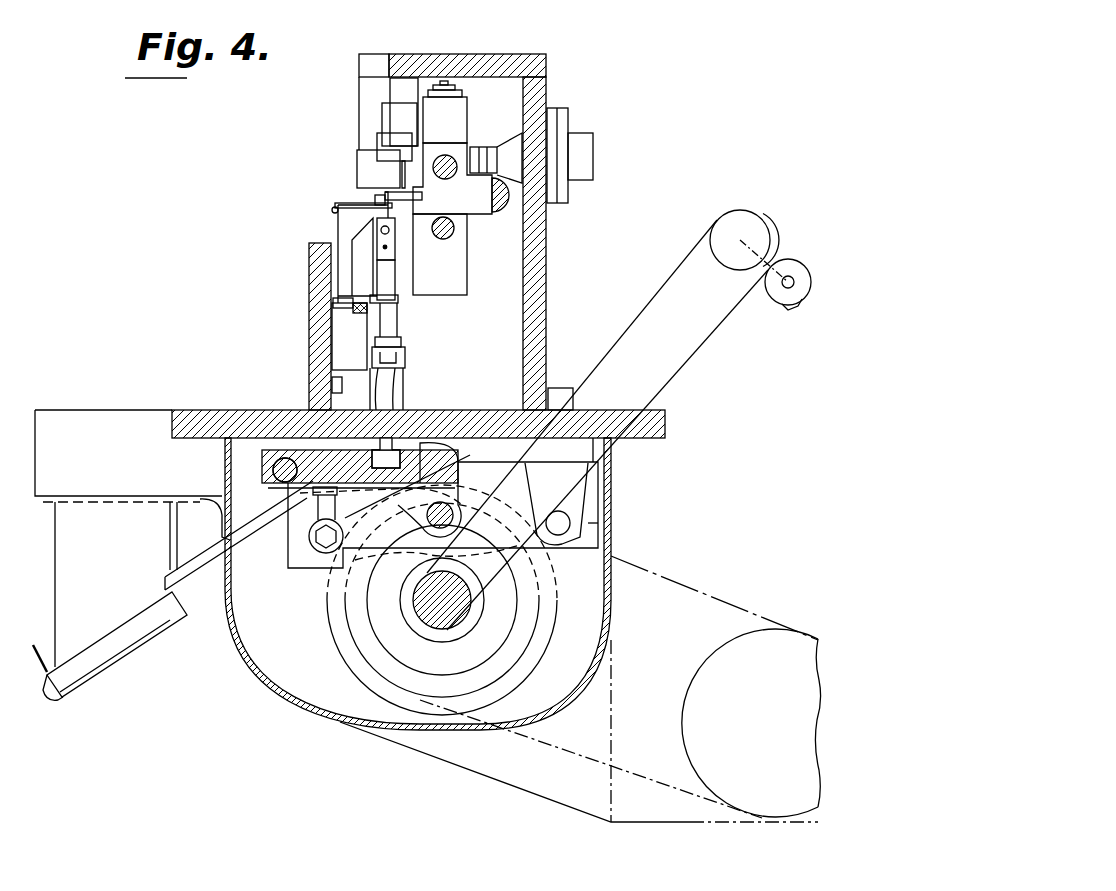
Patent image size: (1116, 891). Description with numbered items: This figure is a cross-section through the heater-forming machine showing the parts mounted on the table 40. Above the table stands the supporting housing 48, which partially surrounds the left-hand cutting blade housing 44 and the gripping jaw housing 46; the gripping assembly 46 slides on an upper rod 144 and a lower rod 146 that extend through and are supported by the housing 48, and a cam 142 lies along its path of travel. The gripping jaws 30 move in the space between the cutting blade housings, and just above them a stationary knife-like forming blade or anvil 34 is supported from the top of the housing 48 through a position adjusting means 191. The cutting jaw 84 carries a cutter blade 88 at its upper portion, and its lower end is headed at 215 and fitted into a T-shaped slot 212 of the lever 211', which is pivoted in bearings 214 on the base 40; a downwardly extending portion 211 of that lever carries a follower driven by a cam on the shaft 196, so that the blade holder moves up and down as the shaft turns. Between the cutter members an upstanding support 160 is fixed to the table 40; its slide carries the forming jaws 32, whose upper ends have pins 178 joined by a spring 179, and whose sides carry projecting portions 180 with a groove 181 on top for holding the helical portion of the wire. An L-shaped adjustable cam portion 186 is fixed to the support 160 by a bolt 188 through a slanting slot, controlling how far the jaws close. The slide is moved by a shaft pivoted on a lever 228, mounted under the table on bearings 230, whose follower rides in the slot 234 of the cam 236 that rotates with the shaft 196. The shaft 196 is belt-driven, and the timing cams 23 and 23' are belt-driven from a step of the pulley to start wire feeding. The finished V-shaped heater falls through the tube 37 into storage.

The supporting housing 48 is at (470, 54).
The gripping jaw housing 46 is at (470, 117).
The position adjusting means 191 is at (377, 140).
The forming blade or anvil 34 is at (390, 172).
The gripping jaws 30 is at (388, 192).
The projecting portion 180 is at (352, 202).
The pin 178 is at (332, 210).
The spring 179 is at (338, 222).
The forming jaws 32 is at (302, 260).
The upper rod 144 is at (445, 179).
The cam 142 is at (512, 249).
The groove 181 is at (392, 224).
The cutter blade 88 is at (387, 247).
The lower rod 146 is at (441, 239).
The cutting jaw 84 is at (391, 282).
The left-hand cutting blade housing 44 is at (467, 270).
The adjustable cam portion 186 is at (353, 306).
The bolt 188 is at (398, 322).
The upstanding support 160 is at (309, 332).
The timing cam 23 is at (607, 379).
The timing cam 23' is at (629, 444).
The table 40 is at (650, 438).
The T-shaped slots 212 is at (435, 447).
The lever 211' is at (452, 494).
The bearings 230 is at (443, 503).
The lever 228 is at (505, 497).
The bearings 214 is at (288, 484).
The headed lower end 215 is at (370, 464).
The downwardly extending portion 211 is at (357, 520).
The tube 37 is at (250, 540).
The slot 234 is at (357, 618).
The shaft 196 is at (450, 617).
The cam 236 is at (343, 668).